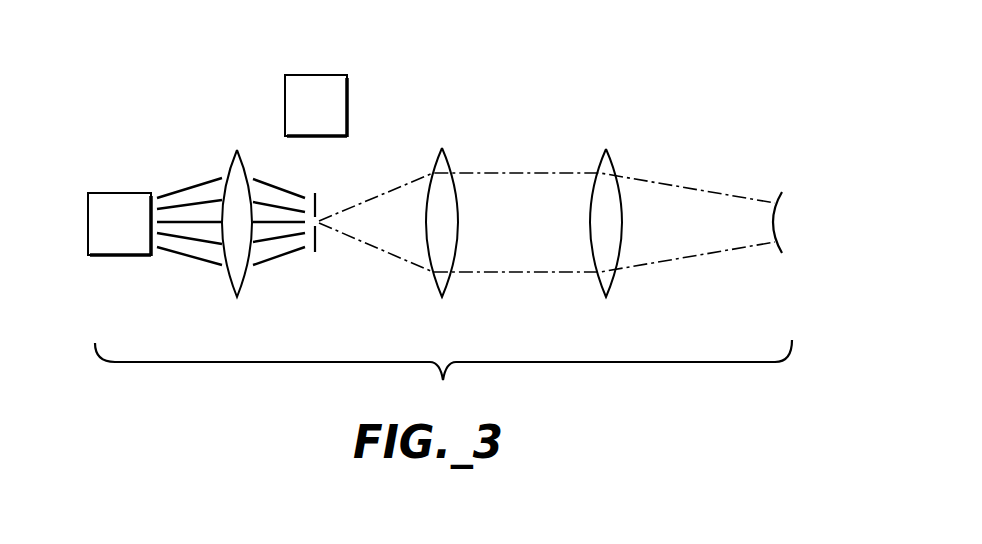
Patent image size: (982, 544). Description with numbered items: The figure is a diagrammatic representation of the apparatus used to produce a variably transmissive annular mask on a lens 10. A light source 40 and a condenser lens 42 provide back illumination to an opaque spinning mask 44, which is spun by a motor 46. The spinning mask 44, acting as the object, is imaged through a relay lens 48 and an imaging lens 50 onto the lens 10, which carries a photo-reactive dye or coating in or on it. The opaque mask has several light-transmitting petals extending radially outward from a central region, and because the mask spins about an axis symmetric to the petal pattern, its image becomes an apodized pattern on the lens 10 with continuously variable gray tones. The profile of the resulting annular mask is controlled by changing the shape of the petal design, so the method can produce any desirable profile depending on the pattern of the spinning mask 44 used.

The lens 10 is at (773, 190).
The light source 40 is at (105, 193).
The condenser lens 42 is at (227, 275).
The spinning mask 44 is at (318, 247).
The motor 46 is at (305, 75).
The relay lens 48 is at (444, 156).
The imaging lens 50 is at (608, 156).